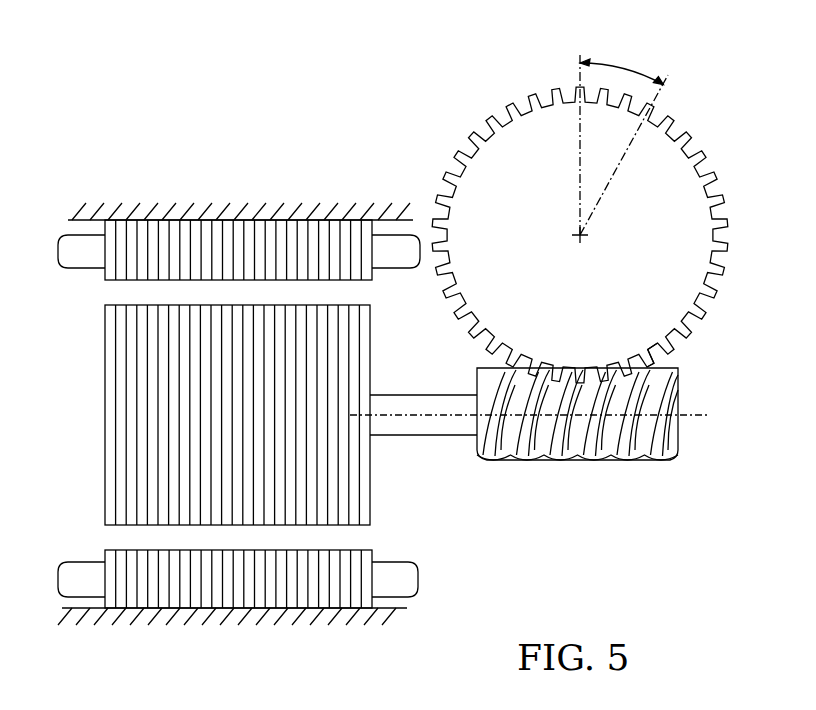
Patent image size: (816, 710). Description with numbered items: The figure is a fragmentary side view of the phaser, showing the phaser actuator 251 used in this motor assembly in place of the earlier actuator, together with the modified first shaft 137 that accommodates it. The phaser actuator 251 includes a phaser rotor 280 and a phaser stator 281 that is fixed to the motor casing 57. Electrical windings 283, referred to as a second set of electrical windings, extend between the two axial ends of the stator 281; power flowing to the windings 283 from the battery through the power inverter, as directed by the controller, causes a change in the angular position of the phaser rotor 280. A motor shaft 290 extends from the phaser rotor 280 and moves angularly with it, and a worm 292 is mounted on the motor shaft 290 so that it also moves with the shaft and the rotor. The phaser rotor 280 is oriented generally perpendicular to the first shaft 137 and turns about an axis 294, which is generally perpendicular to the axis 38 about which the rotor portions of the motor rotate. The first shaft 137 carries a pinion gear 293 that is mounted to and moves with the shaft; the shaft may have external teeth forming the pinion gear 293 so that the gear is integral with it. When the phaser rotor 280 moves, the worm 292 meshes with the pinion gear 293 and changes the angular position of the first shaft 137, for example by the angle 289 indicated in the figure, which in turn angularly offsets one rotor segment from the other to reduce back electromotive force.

The motor casing 57 is at (88, 212).
The phaser stator 281 is at (258, 260).
The electrical windings 283 is at (92, 270).
The phaser rotor 280 is at (256, 429).
The motor shaft 290 is at (400, 437).
The axis 294 is at (692, 418).
The worm 292 is at (595, 462).
The first shaft 137 is at (677, 195).
The pinion gear 293 is at (665, 350).
The axis 38 is at (584, 240).
The angle 289 is at (626, 63).
The phaser actuator 251 is at (493, 522).